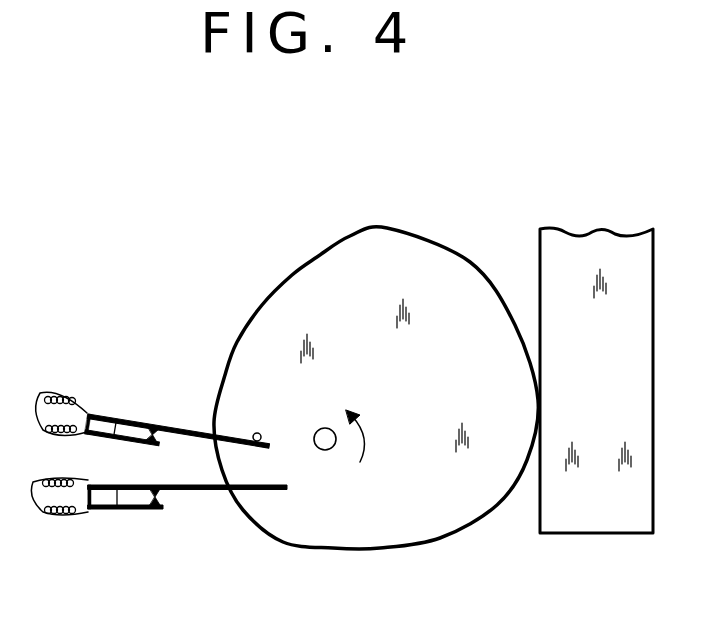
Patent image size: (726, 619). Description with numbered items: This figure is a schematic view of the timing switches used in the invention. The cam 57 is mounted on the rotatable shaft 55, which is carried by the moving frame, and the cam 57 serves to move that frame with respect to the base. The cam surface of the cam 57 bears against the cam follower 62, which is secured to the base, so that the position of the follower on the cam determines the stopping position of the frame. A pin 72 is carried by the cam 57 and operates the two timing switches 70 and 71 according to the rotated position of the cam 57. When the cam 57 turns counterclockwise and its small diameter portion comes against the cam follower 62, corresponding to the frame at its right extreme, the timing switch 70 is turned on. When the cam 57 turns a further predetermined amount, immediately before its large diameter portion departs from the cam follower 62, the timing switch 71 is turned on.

The rotatable shaft 55 is at (325, 450).
The cam 57 is at (292, 295).
The cam follower 62 is at (573, 520).
The timing switch 70 is at (110, 509).
The timing switch 71 is at (105, 413).
The pin 72 is at (257, 433).